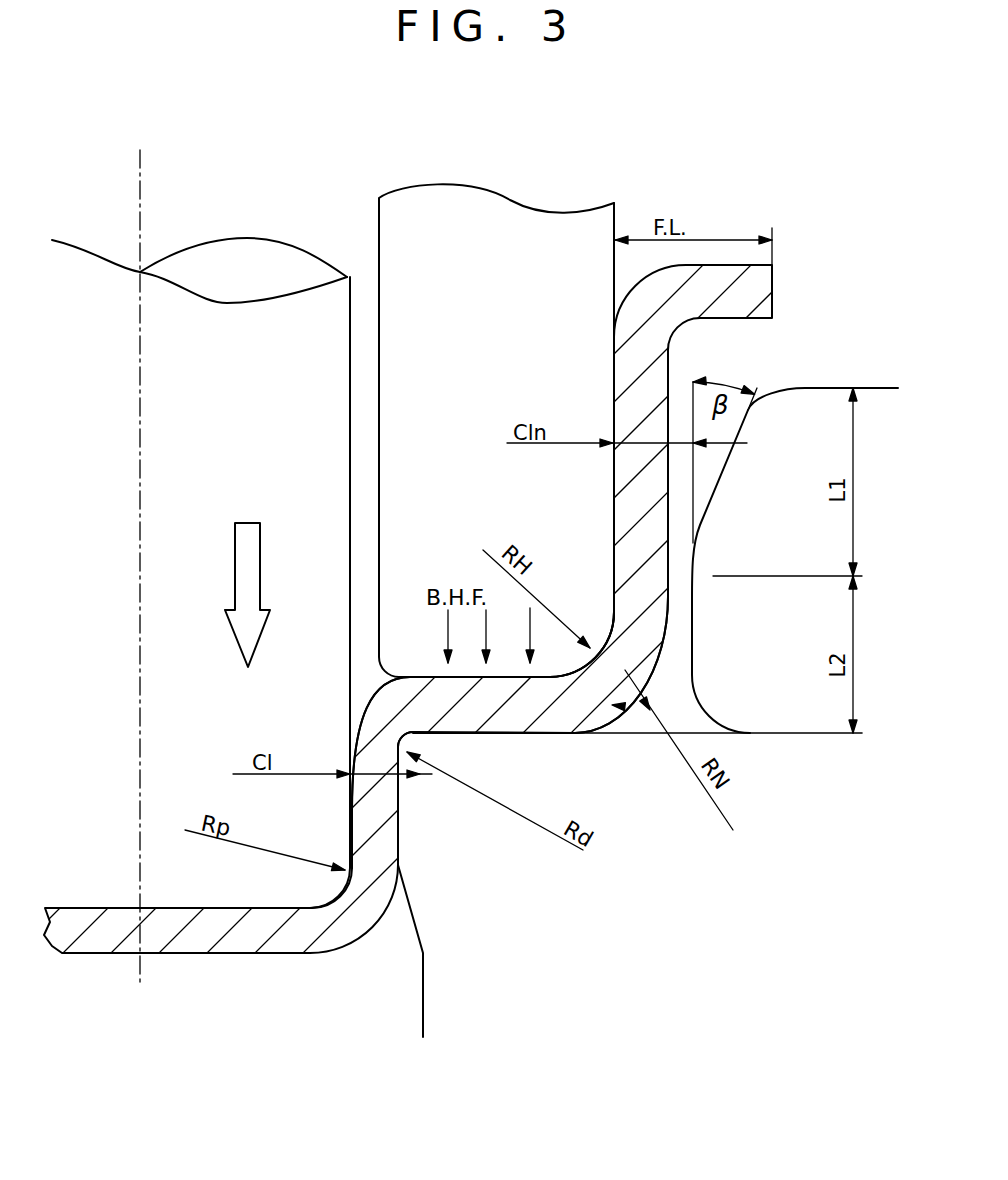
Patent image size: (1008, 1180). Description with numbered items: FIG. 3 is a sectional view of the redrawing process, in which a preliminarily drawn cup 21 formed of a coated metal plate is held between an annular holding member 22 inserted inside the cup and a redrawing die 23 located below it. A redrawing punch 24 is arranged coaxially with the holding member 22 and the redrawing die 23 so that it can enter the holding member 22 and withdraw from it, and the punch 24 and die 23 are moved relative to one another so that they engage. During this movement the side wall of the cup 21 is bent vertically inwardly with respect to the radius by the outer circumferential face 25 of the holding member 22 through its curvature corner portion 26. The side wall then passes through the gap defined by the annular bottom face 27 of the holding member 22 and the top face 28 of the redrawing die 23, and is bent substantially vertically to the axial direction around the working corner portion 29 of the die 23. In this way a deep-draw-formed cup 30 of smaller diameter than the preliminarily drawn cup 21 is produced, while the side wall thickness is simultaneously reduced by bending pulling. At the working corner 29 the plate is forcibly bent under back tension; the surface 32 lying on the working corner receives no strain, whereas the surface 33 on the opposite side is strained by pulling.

The preliminarily drawn cup 21 is at (657, 353).
The annular holding member 22 is at (488, 358).
The redrawing die 23 is at (615, 980).
The redrawing punch 24 is at (210, 460).
The outer circumferential face 25 is at (613, 277).
The curvature corner portion 26 is at (597, 640).
The annular bottom face 27 is at (433, 677).
The top face 28 is at (590, 735).
The working corner portion 29 is at (411, 735).
The deep-draw-formed cup 30 is at (398, 818).
The surface on the working corner 32 is at (477, 720).
The surface on the side opposite to the working corner 33 is at (380, 693).